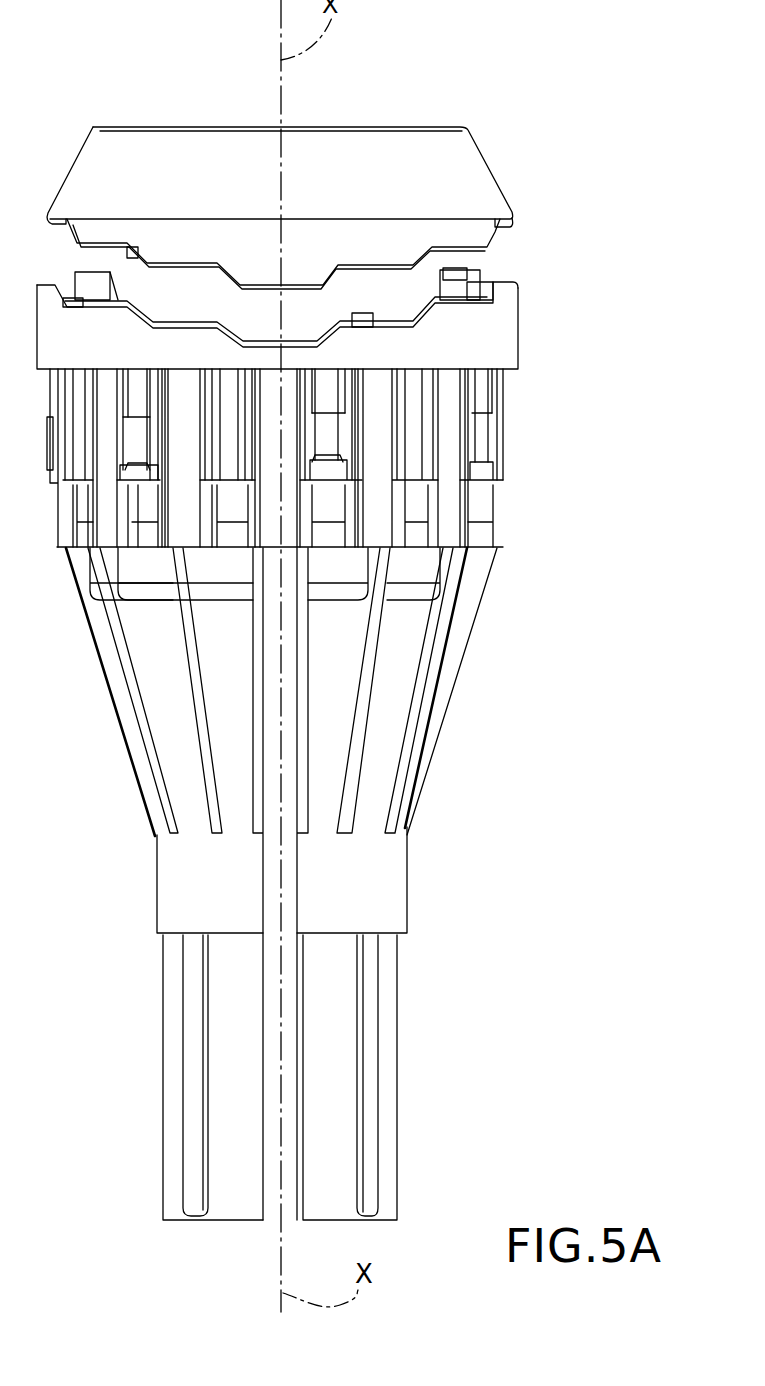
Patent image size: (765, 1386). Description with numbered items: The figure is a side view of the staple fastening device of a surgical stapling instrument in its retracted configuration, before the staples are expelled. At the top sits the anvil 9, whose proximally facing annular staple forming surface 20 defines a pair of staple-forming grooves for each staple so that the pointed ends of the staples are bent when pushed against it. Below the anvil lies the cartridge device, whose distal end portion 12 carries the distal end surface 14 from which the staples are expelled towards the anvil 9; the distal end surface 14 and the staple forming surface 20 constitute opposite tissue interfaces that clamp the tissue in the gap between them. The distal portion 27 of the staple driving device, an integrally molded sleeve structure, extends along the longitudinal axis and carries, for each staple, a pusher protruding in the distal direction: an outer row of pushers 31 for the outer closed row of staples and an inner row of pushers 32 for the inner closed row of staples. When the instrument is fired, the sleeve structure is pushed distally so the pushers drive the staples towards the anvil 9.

The anvil 9 is at (350, 127).
The staple forming surface 20 is at (470, 252).
The distal end surface 14 is at (507, 273).
The distal end portion 12 is at (500, 336).
The outer row of pushers 31 is at (453, 510).
The inner row of pushers 32 is at (412, 512).
The distal portion of staple driving device 27 is at (378, 884).